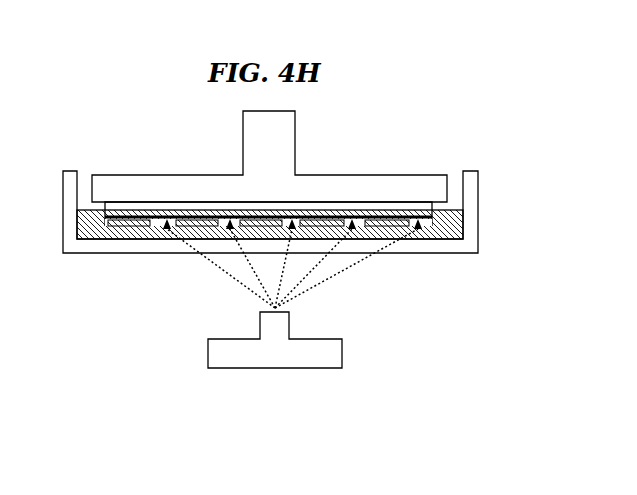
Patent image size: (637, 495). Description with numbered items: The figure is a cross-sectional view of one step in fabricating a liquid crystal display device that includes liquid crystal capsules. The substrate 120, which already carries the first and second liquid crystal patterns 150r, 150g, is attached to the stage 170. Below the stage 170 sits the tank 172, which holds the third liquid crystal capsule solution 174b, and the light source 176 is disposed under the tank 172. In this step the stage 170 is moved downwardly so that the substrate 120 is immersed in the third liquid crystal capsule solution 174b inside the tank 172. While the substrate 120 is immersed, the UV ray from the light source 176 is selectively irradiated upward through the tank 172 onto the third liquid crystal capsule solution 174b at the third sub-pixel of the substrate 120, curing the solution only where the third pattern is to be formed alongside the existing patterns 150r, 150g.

The substrate 120 is at (125, 210).
The stage 170 is at (188, 178).
The first liquid crystal pattern 150r is at (377, 222).
The second liquid crystal pattern 150g is at (403, 222).
The third liquid crystal capsule solution 174b is at (104, 230).
The tank 172 is at (432, 245).
The light source 176 is at (273, 368).